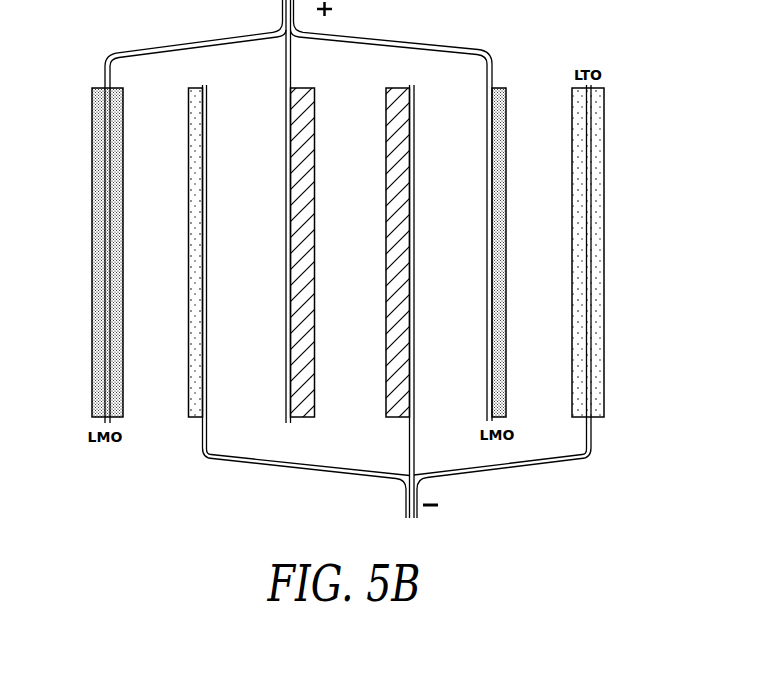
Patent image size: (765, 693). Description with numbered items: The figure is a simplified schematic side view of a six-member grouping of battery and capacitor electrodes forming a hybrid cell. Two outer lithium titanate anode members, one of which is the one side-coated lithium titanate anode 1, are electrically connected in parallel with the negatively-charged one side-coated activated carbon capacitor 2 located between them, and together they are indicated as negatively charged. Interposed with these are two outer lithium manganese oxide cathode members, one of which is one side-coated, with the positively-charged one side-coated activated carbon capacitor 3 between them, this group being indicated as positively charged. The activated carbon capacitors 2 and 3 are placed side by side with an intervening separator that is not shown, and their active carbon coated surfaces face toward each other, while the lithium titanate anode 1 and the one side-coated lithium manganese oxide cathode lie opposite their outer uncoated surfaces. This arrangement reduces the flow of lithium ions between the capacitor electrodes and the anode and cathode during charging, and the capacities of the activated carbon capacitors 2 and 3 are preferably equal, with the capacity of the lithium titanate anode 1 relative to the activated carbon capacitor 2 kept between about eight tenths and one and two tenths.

The one side-coated LTO anode 1 is at (292, 292).
The negatively-charged one side-coated AC capacitor 2 is at (306, 222).
The positively-charged one side-coated AC capacitor 3 is at (391, 292).